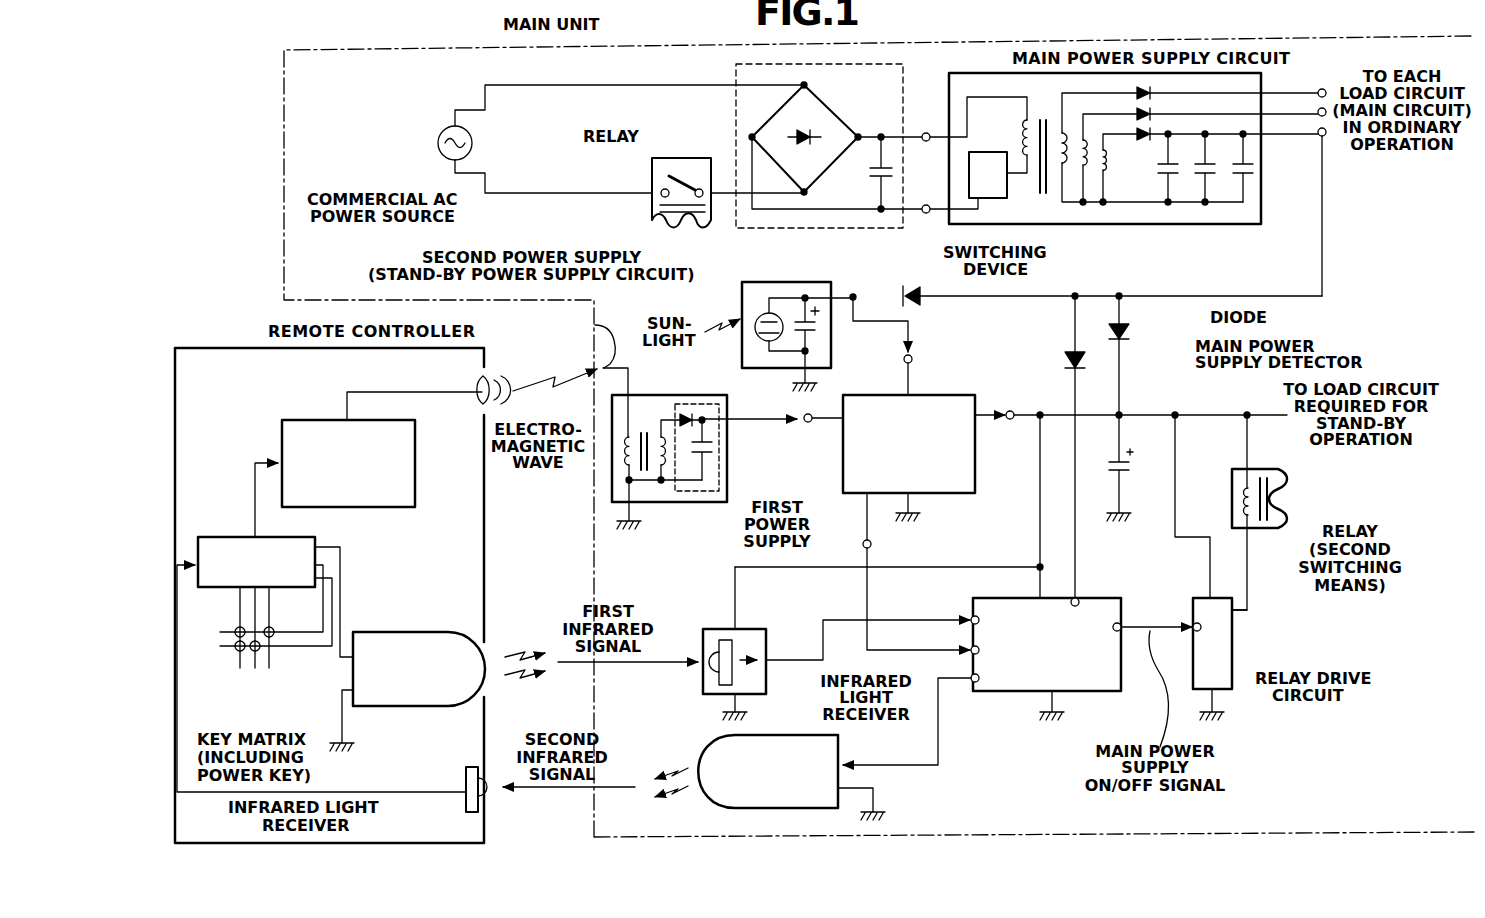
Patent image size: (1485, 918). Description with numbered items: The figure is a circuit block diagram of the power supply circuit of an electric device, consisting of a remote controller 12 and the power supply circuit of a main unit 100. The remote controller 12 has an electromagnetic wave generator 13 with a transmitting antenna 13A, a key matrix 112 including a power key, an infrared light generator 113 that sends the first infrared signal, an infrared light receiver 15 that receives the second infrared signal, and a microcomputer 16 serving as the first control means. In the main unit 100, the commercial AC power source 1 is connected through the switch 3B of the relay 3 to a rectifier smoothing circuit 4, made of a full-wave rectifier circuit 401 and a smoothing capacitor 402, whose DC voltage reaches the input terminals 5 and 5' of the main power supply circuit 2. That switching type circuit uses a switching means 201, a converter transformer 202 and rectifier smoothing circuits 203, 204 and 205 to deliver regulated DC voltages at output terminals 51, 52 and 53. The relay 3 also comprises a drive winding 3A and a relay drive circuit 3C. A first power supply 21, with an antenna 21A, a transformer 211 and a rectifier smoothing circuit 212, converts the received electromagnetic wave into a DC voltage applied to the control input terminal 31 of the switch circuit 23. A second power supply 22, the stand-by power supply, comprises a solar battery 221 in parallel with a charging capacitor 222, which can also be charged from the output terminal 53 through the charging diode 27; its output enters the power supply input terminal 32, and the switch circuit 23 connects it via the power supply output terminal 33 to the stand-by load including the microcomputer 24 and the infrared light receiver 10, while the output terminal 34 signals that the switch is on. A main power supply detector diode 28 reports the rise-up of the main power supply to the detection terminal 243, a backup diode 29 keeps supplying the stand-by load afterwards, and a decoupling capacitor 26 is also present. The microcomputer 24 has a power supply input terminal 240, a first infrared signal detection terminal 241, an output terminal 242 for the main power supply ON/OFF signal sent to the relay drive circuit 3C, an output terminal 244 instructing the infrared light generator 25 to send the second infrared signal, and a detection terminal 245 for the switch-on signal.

The main unit 100 is at (387, 47).
The commercial AC power source 1 is at (440, 150).
The relay 3 is at (958, 356).
The drive winding 3A is at (1232, 497).
The relay switch 3B is at (683, 158).
The relay drive circuit 3C is at (1234, 648).
The rectifier smoothing circuit 4 is at (730, 73).
The full-wave rectifier circuit 401 is at (826, 108).
The smoothing capacitor 402 is at (876, 177).
The input terminal 5 is at (924, 108).
The input terminal 5' is at (927, 181).
The main power supply circuit 2 is at (1110, 168).
The switching means 201 is at (975, 205).
The converter transformer 202 is at (1047, 200).
The rectifier smoothing circuit 203 is at (1236, 172).
The rectifier smoothing circuit 204 is at (1198, 174).
The rectifier smoothing circuit 205 is at (1162, 172).
The output terminal 51 is at (1318, 91).
The output terminal 52 is at (1318, 114).
The output terminal 53 is at (1319, 136).
The second power supply 22 is at (776, 321).
The solar battery 221 is at (757, 337).
The charging capacitor 222 is at (822, 328).
The charging diode 27 is at (919, 302).
The power supply input terminal 32 is at (913, 359).
The power supply output terminal 33 is at (1011, 410).
The switch circuit 23 is at (976, 472).
The output terminal 34 is at (872, 544).
The first power supply 21 is at (700, 474).
The transformer 211 is at (644, 484).
The rectifier smoothing circuit 212 is at (693, 494).
The control input terminal 31 is at (809, 423).
The main power supply detector diode 28 is at (1087, 360).
The backup diode 29 is at (1131, 331).
The decoupling capacitor 26 is at (1136, 468).
The microcomputer 24 is at (963, 590).
The power supply input terminal 240 is at (1039, 597).
The first infrared signal detection terminal 241 is at (970, 617).
The output terminal 242 is at (1116, 615).
The detection terminal 243 is at (1081, 597).
The output terminal 244 is at (980, 693).
The detection terminal 245 is at (970, 647).
The infrared light receiver 10 is at (768, 676).
The infrared light generator 25 is at (706, 748).
The remote controller 12 is at (195, 349).
The electromagnetic wave generator 13 is at (295, 419).
The antenna 13A is at (490, 377).
The antenna 21A is at (595, 327).
The microcomputer 16 is at (242, 537).
The key matrix 112 is at (253, 676).
The infrared light generator 113 is at (413, 631).
The infrared light receiver 15 is at (465, 807).